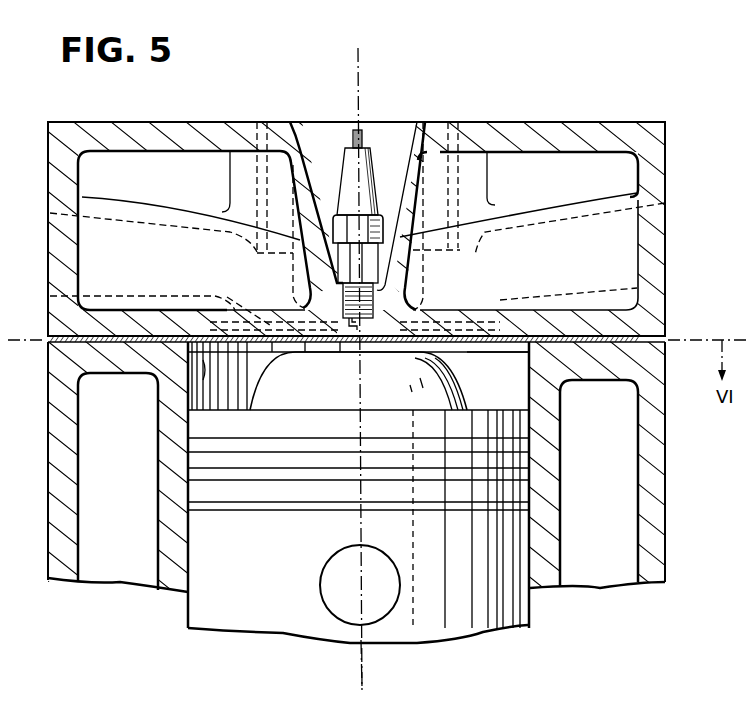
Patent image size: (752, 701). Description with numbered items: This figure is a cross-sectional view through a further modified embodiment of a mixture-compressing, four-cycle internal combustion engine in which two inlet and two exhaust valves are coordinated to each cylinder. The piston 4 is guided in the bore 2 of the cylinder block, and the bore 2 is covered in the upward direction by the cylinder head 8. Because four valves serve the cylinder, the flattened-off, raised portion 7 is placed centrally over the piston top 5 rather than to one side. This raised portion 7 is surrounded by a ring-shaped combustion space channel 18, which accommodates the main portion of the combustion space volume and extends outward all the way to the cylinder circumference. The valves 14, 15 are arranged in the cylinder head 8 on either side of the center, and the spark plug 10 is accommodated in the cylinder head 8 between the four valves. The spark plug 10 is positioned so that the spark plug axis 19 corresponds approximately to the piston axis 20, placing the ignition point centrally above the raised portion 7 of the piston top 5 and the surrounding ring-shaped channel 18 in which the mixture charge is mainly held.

The bore 2 is at (203, 393).
The piston 4 is at (255, 612).
The piston top 5 is at (253, 413).
The flattened-off raised portion 7 is at (390, 356).
The cylinder head 8 is at (560, 135).
The spark plug 10 is at (375, 150).
The valve 14 is at (248, 285).
The valve 15 is at (480, 262).
The ring-shaped combustion space channel 18 is at (506, 376).
The spark plug axis 19 is at (358, 73).
The piston axis 20 is at (362, 657).